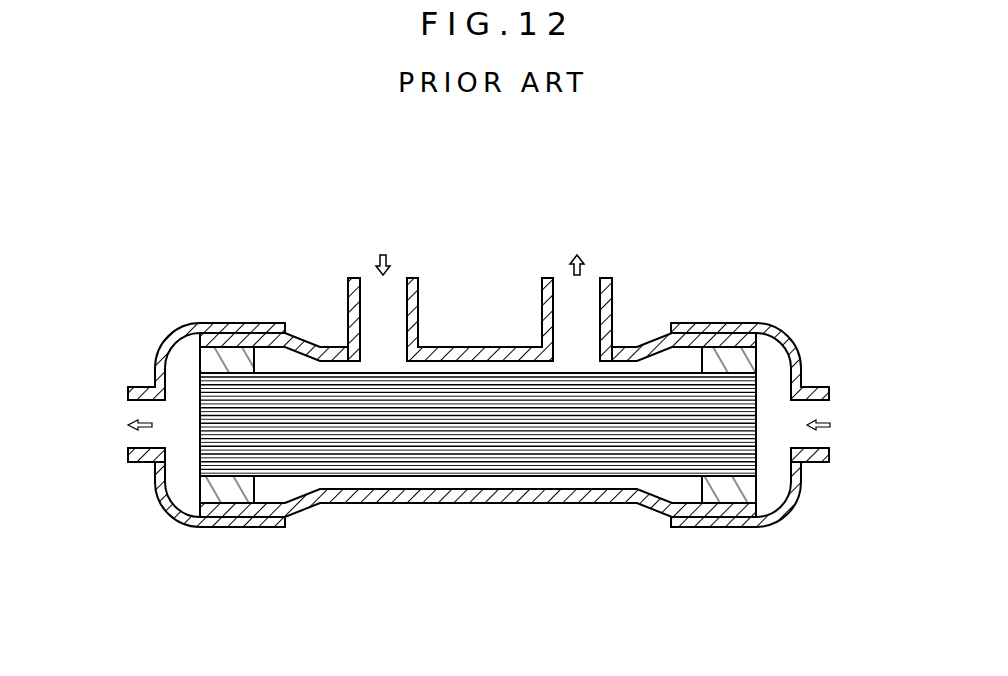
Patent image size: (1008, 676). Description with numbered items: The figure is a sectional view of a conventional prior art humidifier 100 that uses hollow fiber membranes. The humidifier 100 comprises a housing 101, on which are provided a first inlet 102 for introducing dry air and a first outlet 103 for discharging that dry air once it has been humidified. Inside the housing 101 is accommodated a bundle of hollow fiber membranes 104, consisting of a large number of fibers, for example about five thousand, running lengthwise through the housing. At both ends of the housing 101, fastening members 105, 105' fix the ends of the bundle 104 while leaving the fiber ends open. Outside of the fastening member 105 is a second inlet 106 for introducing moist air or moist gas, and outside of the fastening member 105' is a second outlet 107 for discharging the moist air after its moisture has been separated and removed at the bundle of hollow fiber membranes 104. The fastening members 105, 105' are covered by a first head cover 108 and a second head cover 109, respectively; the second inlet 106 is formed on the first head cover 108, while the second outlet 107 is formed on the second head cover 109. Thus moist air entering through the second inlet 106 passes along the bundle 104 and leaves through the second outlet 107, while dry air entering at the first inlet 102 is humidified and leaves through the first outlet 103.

The humidifier 100 is at (497, 246).
The housing 101 is at (543, 503).
The first inlet 102 is at (349, 302).
The first outlet 103 is at (611, 300).
The bundle of hollow fiber membranes 104 is at (402, 450).
The fastening member 105 is at (729, 459).
The fastening member 105' is at (234, 459).
The second inlet 106 is at (809, 460).
The second outlet 107 is at (147, 462).
The first head cover 108 is at (785, 327).
The second head cover 109 is at (178, 328).